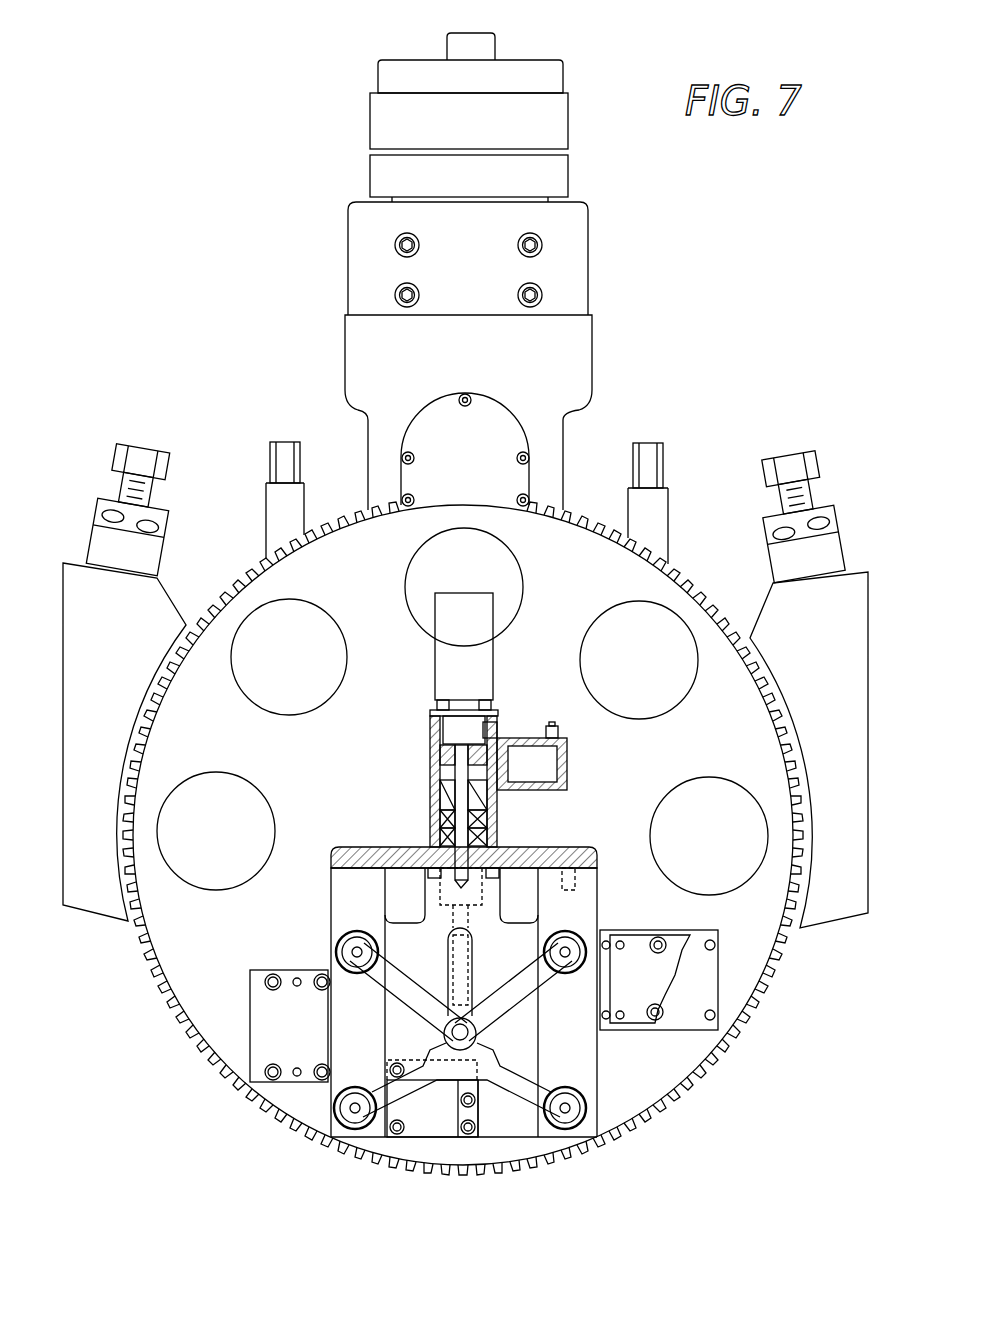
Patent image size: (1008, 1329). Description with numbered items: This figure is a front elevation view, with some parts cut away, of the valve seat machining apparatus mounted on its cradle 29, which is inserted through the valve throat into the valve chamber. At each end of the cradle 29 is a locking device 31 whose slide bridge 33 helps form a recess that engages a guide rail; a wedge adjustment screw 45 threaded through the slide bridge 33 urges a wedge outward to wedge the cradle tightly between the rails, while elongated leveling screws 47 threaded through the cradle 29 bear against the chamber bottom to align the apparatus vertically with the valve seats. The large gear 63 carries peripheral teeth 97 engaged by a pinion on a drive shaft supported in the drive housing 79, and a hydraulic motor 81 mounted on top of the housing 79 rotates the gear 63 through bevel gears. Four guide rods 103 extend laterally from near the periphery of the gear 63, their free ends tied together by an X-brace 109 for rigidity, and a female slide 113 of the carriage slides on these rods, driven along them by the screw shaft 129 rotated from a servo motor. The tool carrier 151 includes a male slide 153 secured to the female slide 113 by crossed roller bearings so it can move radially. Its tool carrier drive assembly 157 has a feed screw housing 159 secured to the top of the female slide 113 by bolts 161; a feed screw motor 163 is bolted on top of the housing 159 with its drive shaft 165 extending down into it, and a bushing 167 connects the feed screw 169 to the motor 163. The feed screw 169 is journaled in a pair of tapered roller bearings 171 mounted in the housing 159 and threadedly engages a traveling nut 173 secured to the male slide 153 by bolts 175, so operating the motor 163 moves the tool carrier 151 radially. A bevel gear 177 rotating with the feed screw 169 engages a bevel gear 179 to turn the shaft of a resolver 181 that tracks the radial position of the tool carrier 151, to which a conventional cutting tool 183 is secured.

The cradle 29 is at (87, 905).
The locking devices 31 is at (457, 502).
The slide bridge 33 is at (100, 539).
The wedge adjustment screw 45 is at (152, 493).
The leveling screws 47 is at (284, 447).
The gear 63 is at (660, 588).
The drive housing 79 is at (578, 359).
The hydraulic motor 81 is at (360, 250).
The peripheral teeth 97 is at (222, 598).
The guide rods 103 is at (335, 947).
The X-brace 109 is at (540, 1092).
The female slide 113 is at (580, 915).
The screw shaft 129 is at (450, 1020).
The tool carrier 151 is at (490, 1143).
The male slide 153 is at (522, 1128).
The tool carrier drive assembly 157 is at (495, 764).
The feed screw housing 159 is at (548, 850).
The bolts 161 is at (575, 881).
The feed screw motor 163 is at (440, 625).
The drive shaft 165 is at (455, 748).
The bushing 167 is at (455, 772).
The feed screw 169 is at (440, 878).
The tapered roller bearings 171 is at (489, 821).
The traveling nut 173 is at (425, 895).
The bolts 175 is at (433, 845).
The bevel gear 177 is at (448, 794).
The bevel gear 179 is at (494, 731).
The resolver 181 is at (543, 748).
The cutting tool 183 is at (427, 1125).